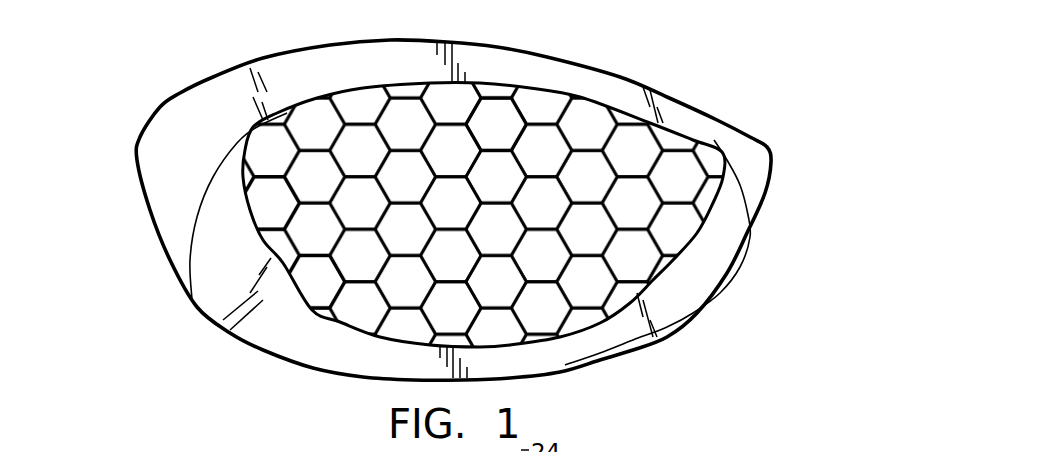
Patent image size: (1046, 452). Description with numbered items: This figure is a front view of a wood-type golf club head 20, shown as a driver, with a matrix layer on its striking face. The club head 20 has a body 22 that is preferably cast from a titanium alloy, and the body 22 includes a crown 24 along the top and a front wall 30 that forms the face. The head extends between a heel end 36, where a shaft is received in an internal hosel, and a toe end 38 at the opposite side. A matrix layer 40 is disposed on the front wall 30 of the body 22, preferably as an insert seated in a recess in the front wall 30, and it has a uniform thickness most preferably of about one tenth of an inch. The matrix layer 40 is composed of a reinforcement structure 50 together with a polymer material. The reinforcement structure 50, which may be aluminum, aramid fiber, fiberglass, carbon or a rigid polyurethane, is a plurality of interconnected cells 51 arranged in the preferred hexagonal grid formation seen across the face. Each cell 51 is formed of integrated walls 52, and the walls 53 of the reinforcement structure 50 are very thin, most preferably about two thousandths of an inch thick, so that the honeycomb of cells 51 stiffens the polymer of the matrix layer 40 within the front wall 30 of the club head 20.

The golf club head 20 is at (711, 43).
The body 22 is at (152, 220).
The crown 24 is at (487, 42).
The front wall 30 is at (714, 140).
The heel end 36 is at (817, 202).
The toe end 38 is at (77, 142).
The matrix layer 40 is at (633, 348).
The reinforcement structure 50 is at (710, 308).
The cell 51 is at (500, 112).
The integrated walls 52 is at (301, 300).
The walls 53 is at (297, 197).